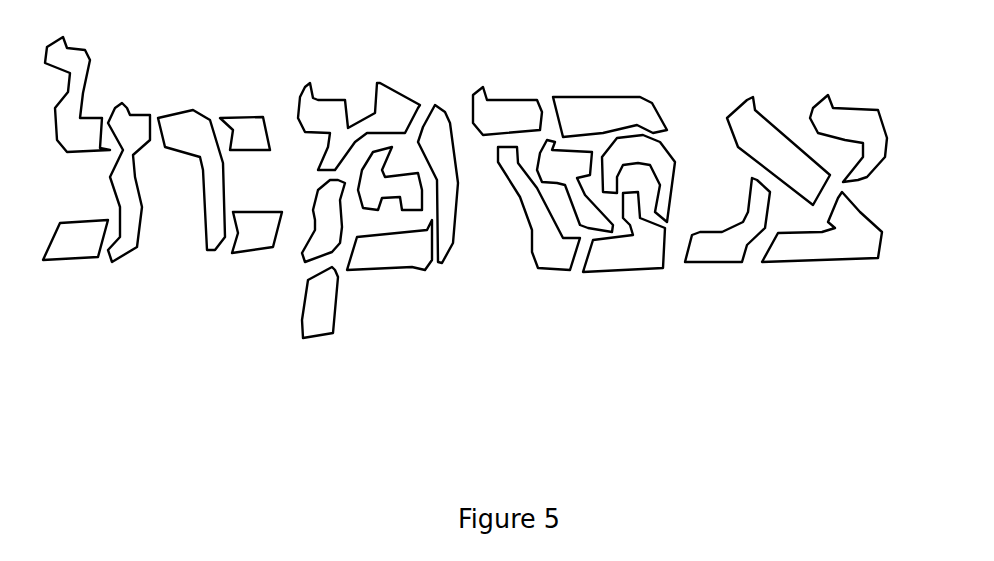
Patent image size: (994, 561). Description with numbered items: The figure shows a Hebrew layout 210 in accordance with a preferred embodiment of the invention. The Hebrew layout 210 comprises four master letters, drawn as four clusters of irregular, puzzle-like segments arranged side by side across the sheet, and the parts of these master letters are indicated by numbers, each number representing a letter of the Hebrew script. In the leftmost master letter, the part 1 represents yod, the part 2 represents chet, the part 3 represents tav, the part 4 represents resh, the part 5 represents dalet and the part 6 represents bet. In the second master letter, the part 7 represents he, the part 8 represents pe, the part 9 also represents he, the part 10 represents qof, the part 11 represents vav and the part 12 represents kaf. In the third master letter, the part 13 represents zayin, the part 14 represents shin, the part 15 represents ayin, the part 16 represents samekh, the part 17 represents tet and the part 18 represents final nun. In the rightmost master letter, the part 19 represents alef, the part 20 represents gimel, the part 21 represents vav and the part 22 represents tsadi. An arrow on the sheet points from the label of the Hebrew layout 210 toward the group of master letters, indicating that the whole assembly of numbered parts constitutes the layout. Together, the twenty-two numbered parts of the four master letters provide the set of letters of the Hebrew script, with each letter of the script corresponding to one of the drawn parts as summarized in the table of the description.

The Hebrew layout 210 is at (240, 394).
The letter part yod (י) 1 is at (77, 94).
The letter part chet (ח) 2 is at (129, 182).
The letter part tav (ת) 3 is at (75, 240).
The letter part resh (ר) 4 is at (191, 180).
The letter part dalet (ד) 5 is at (245, 133).
The letter part bet (ב) 6 is at (257, 232).
The letter part he (ה) 7 is at (359, 126).
The letter part pe (פ) 8 is at (390, 178).
The letter part he (ה) 9 is at (323, 221).
The letter part qof (ק) 10 is at (320, 302).
The letter part vav (ו) 11 is at (438, 184).
The letter part kaf (כ) 12 is at (389, 245).
The letter part zayin (ז) 13 is at (507, 111).
The letter part shin (ש) 14 is at (539, 208).
The letter part ayin (ע) 15 is at (575, 186).
The letter part samekh (ס) 16 is at (610, 117).
The letter part tet (ט) 17 is at (638, 178).
The letter part final nun (ן) 18 is at (624, 232).
The letter part alef (א) 19 is at (778, 151).
The letter part gimel (ג) 20 is at (727, 220).
The letter part vav (ו) 21 is at (848, 138).
The letter part tsadi (צ) 22 is at (822, 227).